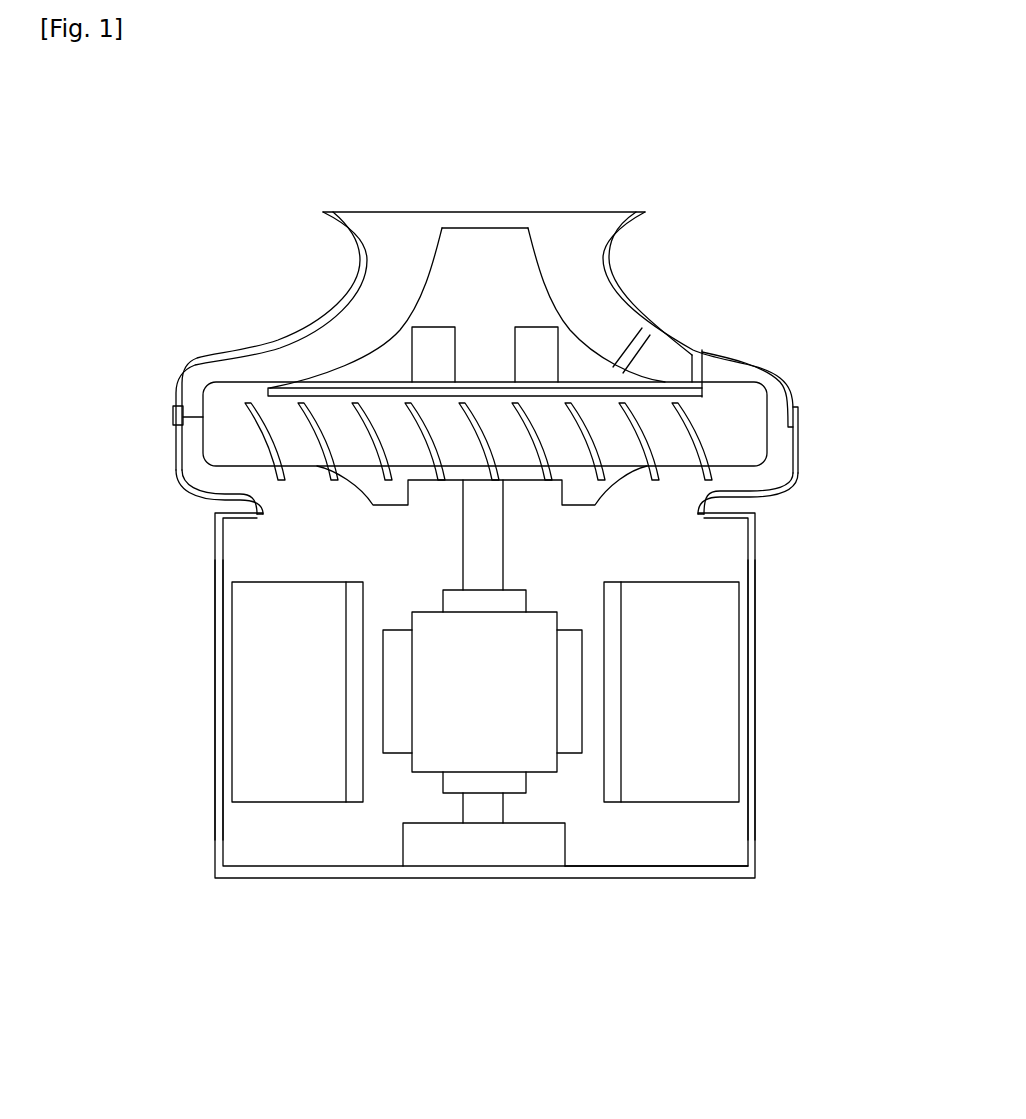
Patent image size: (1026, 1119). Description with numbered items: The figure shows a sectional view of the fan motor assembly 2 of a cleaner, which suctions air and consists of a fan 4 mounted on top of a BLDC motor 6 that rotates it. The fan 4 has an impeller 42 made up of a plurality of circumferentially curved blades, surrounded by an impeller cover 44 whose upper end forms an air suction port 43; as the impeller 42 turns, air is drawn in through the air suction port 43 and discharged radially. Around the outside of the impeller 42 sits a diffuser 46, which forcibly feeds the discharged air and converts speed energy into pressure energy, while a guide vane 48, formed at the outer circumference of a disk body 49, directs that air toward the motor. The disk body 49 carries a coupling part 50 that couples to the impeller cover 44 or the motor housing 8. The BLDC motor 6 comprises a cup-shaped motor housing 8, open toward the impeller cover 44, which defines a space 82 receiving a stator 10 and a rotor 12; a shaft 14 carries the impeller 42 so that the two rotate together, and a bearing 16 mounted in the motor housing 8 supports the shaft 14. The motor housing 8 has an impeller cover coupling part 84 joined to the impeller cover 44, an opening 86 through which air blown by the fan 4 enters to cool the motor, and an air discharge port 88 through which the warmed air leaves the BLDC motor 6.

The fan motor assembly 2 is at (690, 161).
The fan 4 is at (276, 238).
The BLDC motor 6 is at (222, 903).
The motor housing 8 is at (737, 878).
The stator 10 is at (288, 818).
The rotor 12 is at (398, 788).
The shaft 14 is at (490, 810).
The bearing 16 is at (550, 848).
The impeller 42 is at (537, 305).
The air suction port 43 is at (603, 213).
The impeller cover 44 is at (193, 376).
The diffuser 46 is at (694, 352).
The guide vane 48 is at (703, 437).
The disk body 49 is at (674, 428).
The coupling part 50 is at (173, 415).
The space 82 is at (580, 797).
The impeller cover coupling part 84 is at (175, 480).
The opening 86 is at (315, 510).
The air discharge port 88 is at (220, 705).